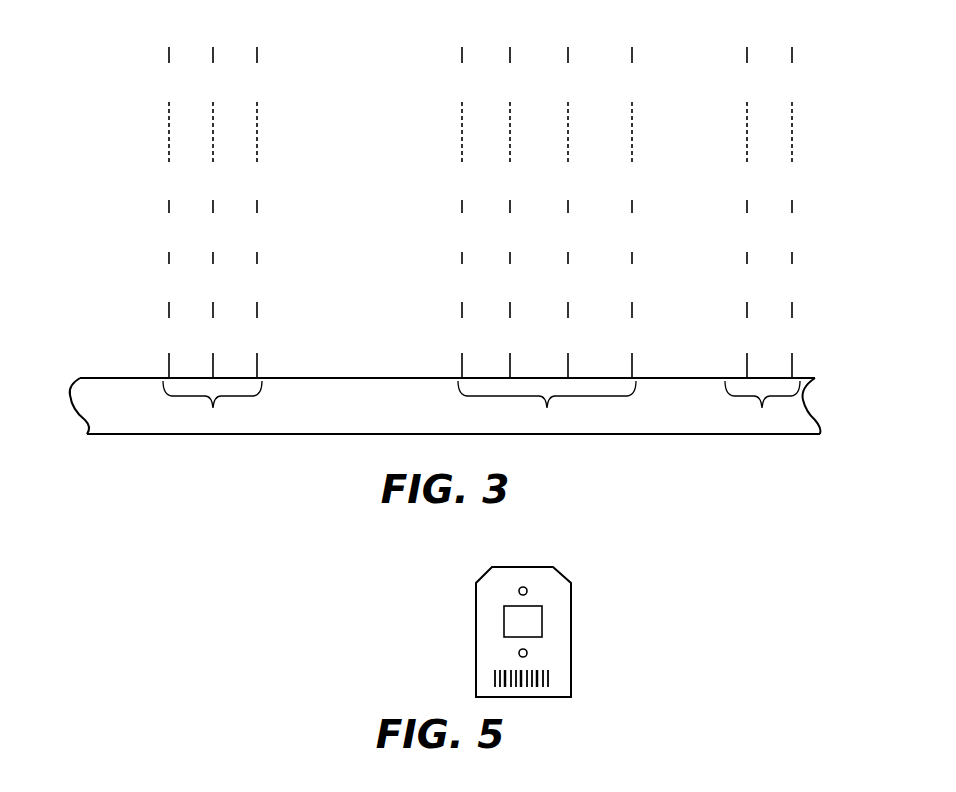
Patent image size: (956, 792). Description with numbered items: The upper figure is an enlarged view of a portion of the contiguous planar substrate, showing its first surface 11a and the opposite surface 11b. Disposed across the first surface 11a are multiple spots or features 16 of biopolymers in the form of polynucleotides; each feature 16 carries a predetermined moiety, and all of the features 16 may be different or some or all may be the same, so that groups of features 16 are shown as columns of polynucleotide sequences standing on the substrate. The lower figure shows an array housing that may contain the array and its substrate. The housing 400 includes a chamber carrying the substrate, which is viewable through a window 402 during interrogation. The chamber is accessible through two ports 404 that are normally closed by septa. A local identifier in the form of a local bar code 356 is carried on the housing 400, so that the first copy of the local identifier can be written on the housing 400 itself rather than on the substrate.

In FIG. 3, the first surface 11a is at (108, 378).
In FIG. 3, the second (bottom) surface of substrate 11b is at (115, 434).
In FIG. 3, the features 16 is at (480, 228).
In FIG. 5, the housing 400 is at (558, 618).
In FIG. 5, the window 402 is at (504, 622).
In FIG. 5, the ports 404 is at (524, 587).
In FIG. 5, the local bar code 356 is at (494, 677).